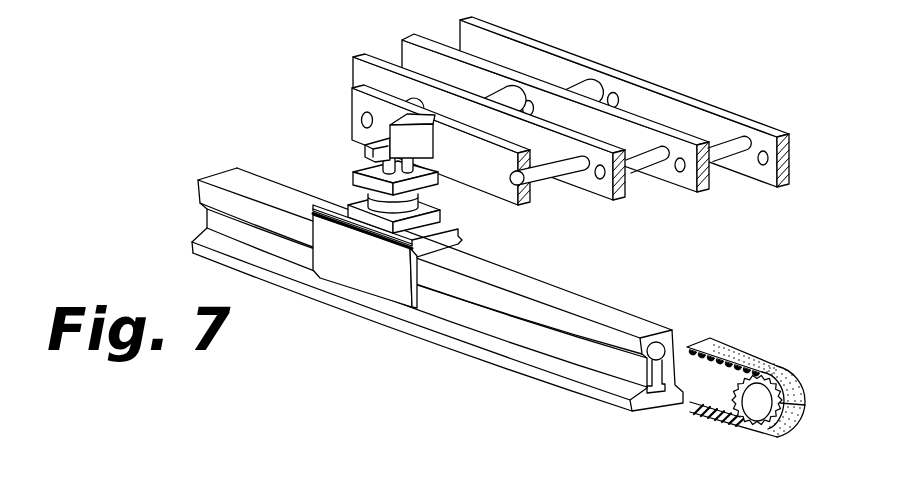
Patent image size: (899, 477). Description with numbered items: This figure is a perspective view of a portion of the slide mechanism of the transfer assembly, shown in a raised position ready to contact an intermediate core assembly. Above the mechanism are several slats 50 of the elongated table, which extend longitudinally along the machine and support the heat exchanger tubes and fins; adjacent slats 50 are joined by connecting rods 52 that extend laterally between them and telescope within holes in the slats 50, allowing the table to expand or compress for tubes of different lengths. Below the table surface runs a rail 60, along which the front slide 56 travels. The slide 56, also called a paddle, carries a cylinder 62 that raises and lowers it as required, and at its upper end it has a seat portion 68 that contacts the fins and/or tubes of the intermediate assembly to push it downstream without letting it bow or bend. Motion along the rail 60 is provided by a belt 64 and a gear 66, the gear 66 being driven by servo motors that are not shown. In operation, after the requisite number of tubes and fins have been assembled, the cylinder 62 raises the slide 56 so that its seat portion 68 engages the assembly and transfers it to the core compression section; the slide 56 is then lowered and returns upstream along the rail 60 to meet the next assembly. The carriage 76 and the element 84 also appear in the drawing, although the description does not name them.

The slats 50 is at (653, 87).
The connecting rods 52 is at (640, 176).
The front slide 56 is at (352, 158).
The rails 60 is at (511, 335).
The cylinder 62 is at (370, 200).
The belt 64 is at (733, 350).
The gear 66 is at (755, 404).
The seat portion 68 is at (398, 124).
The carriage 76 is at (397, 476).
The drive member 84 is at (81, 472).